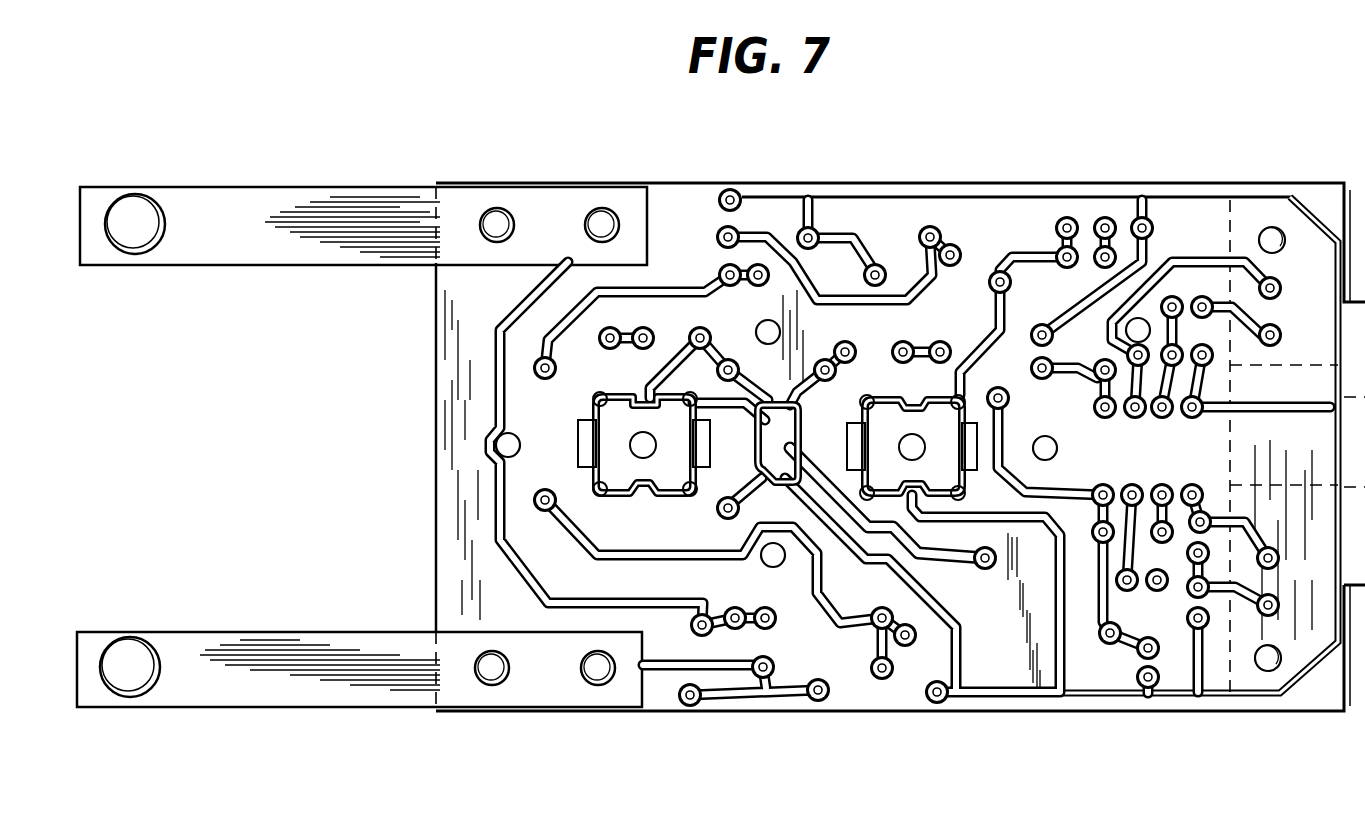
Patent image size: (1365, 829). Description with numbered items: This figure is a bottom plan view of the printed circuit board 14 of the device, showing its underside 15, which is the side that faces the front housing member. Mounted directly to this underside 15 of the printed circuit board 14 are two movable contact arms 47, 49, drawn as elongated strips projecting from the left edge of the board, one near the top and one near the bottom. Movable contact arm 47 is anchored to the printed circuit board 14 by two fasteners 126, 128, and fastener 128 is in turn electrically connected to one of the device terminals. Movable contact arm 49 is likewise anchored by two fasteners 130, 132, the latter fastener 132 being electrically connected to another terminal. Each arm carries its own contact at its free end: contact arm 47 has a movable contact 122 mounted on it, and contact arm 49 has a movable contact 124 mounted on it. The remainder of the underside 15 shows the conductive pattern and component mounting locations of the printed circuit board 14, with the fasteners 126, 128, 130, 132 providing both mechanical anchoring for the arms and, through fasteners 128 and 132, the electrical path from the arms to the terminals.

The printed circuit board 14 is at (1208, 789).
The underside 15 is at (920, 675).
The movable contact arm 47 is at (310, 196).
The movable contact arm 49 is at (300, 697).
The movable contact 122 is at (147, 206).
The movable contact 124 is at (135, 690).
The fastener 126 is at (497, 216).
The fastener 128 is at (640, 170).
The fastener 130 is at (493, 683).
The fastener 132 is at (603, 683).